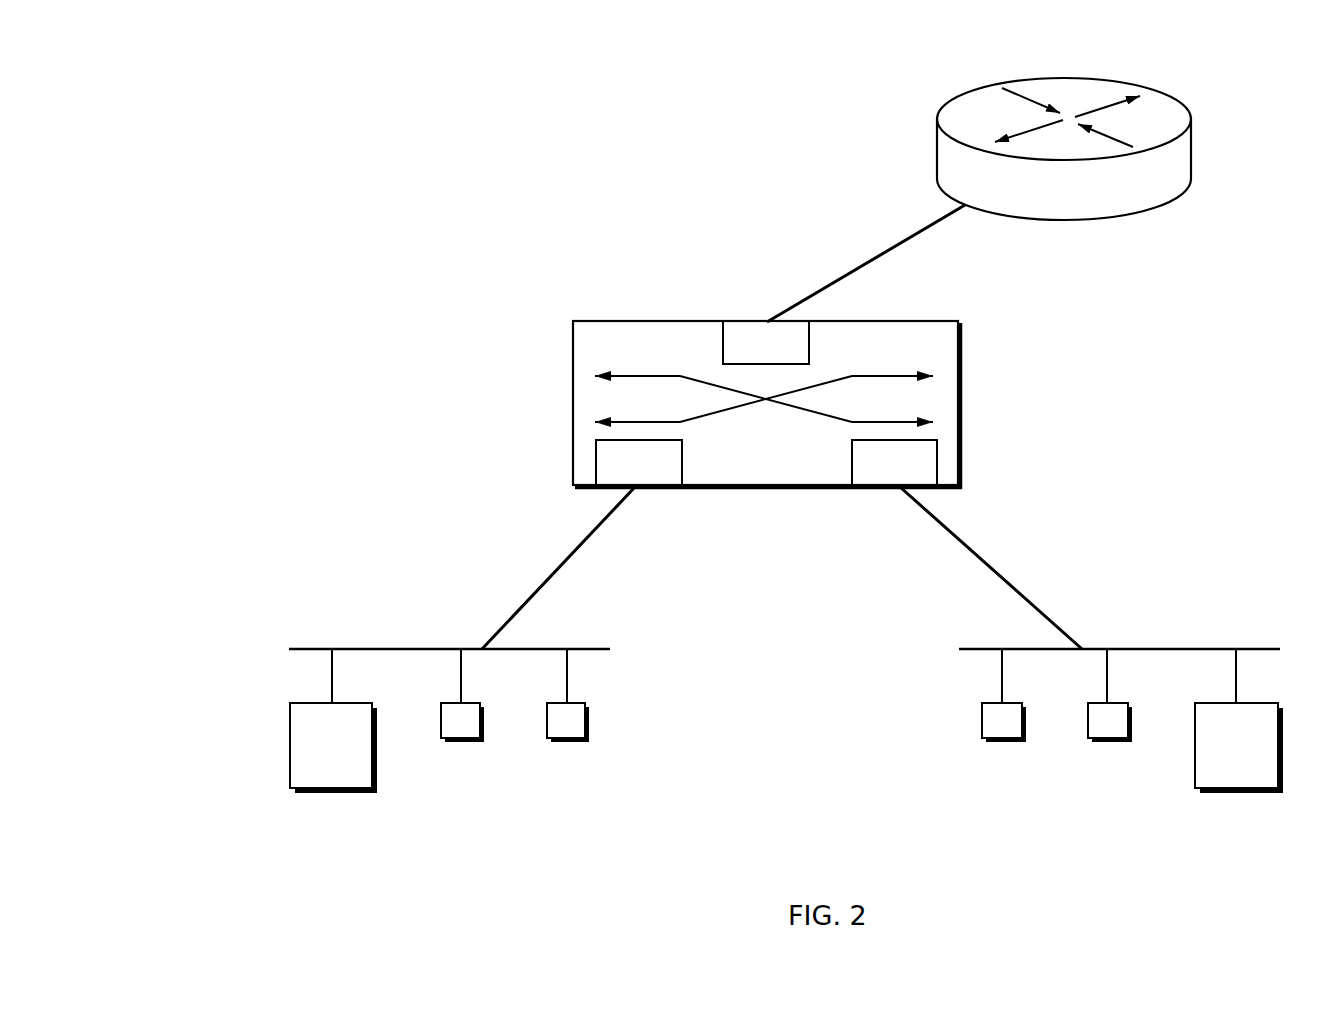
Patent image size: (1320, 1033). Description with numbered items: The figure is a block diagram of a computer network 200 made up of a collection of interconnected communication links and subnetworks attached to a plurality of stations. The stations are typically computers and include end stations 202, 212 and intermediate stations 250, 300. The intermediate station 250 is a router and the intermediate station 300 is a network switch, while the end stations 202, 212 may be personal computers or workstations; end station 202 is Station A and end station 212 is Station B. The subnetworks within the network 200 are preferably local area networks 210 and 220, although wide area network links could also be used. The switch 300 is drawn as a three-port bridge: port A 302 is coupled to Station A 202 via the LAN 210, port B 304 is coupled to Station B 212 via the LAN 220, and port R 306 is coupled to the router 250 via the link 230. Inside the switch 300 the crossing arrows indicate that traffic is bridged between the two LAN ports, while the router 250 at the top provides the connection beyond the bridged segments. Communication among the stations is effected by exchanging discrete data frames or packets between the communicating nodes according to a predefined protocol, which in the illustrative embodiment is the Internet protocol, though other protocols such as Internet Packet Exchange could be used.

The computer network 200 is at (400, 160).
The end station 202 is at (342, 793).
The local area network 210 is at (420, 649).
The end station 212 is at (1250, 795).
The local area network 220 is at (1160, 649).
The link 230 is at (910, 235).
The router 250 is at (1158, 95).
The network switch 300 is at (960, 370).
The port A 302 is at (655, 490).
The port B 304 is at (880, 490).
The port R 306 is at (752, 320).